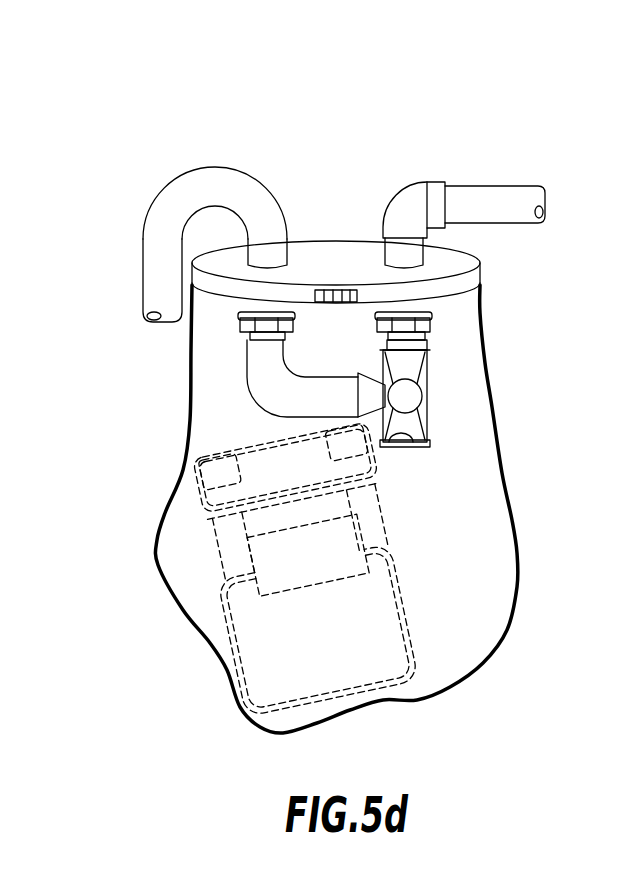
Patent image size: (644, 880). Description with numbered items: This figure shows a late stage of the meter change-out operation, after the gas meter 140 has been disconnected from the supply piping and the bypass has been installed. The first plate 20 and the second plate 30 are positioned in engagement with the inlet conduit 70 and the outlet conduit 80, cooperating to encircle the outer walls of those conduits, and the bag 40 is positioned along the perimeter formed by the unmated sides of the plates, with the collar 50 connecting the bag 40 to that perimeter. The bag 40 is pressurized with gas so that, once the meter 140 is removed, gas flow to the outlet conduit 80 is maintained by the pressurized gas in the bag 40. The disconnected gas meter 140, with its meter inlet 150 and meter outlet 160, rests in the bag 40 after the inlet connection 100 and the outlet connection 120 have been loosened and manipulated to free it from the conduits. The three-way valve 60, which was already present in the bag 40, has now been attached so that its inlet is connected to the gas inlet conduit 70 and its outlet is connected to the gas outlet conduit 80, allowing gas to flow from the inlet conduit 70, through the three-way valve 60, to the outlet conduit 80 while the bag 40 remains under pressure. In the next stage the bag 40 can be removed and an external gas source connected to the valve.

The first plate 20 is at (338, 248).
The second plate 30 is at (457, 272).
The bag 40 is at (497, 415).
The collar 50 is at (303, 298).
The 3-way valve 60 is at (437, 383).
The inlet conduit 70 is at (180, 176).
The outlet conduit 80 is at (497, 183).
The inlet connection 100 is at (240, 318).
The outlet connection 120 is at (427, 313).
The gas meter 140 is at (380, 512).
The meter inlet 150 is at (208, 457).
The meter outlet 160 is at (410, 442).